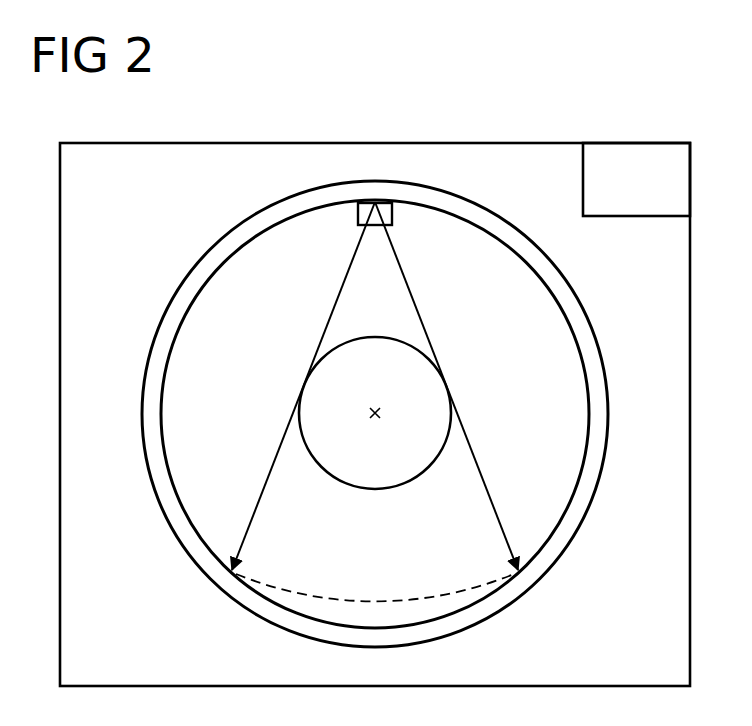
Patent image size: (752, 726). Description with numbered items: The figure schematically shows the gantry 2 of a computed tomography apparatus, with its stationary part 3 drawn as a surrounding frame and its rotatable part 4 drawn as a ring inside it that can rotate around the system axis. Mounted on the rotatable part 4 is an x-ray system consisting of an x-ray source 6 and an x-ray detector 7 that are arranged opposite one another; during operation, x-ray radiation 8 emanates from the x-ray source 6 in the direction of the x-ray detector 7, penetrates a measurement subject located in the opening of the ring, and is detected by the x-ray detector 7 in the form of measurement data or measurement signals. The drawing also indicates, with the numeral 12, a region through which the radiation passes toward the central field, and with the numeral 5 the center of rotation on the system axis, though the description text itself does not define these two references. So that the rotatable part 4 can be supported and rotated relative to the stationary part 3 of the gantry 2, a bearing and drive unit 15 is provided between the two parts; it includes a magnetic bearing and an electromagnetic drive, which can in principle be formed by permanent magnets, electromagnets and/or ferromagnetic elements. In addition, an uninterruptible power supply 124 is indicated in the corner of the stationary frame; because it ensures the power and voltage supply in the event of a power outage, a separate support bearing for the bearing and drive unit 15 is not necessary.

The gantry 2 is at (520, 136).
The stationary part 3 is at (332, 141).
The uninterruptible power supply 124 is at (644, 154).
The rotatable part 4 is at (172, 448).
The bearing and drive unit 15 is at (583, 498).
The x-ray source 6 is at (356, 222).
The x-ray radiation 8 is at (358, 386).
The beam edge 12 is at (313, 395).
The x-ray detector 7 is at (306, 595).
The isocenter 5 is at (375, 406).